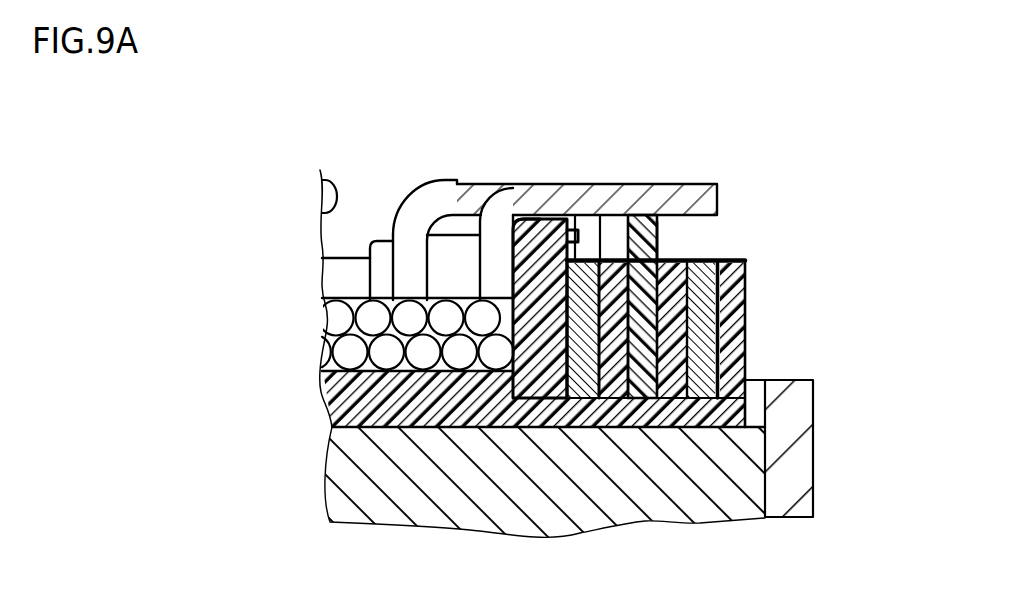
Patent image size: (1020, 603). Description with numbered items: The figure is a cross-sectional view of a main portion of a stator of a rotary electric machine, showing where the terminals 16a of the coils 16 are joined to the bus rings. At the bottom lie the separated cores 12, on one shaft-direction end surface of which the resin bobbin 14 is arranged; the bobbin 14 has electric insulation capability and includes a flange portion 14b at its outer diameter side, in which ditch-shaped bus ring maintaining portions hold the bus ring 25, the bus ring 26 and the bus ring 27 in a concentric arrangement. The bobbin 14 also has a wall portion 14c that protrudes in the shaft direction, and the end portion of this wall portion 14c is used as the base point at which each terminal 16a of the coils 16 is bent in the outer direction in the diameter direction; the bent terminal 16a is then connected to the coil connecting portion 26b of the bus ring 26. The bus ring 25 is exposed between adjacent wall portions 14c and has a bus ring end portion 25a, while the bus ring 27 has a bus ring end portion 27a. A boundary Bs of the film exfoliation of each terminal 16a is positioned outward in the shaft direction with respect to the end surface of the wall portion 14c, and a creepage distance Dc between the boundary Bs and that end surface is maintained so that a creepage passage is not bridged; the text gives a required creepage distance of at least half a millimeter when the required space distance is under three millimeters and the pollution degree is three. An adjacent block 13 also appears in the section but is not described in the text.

The separated cores 12 is at (513, 525).
The frame portion 13 is at (813, 415).
The bobbin 14 is at (420, 407).
The flange portion 14b is at (746, 328).
The wall portion 14c is at (517, 293).
The coils 16 is at (349, 357).
The terminals 16a is at (463, 183).
The bus ring 25 is at (583, 393).
The bus ring end portion 25a is at (588, 257).
The bus ring 26 is at (647, 392).
The coil connecting portion 26b is at (660, 238).
The bus ring 27 is at (700, 393).
The bus ring end portion 27a is at (708, 260).
The boundary of film exfoliation Bs is at (529, 220).
The creepage distance Dc is at (547, 232).